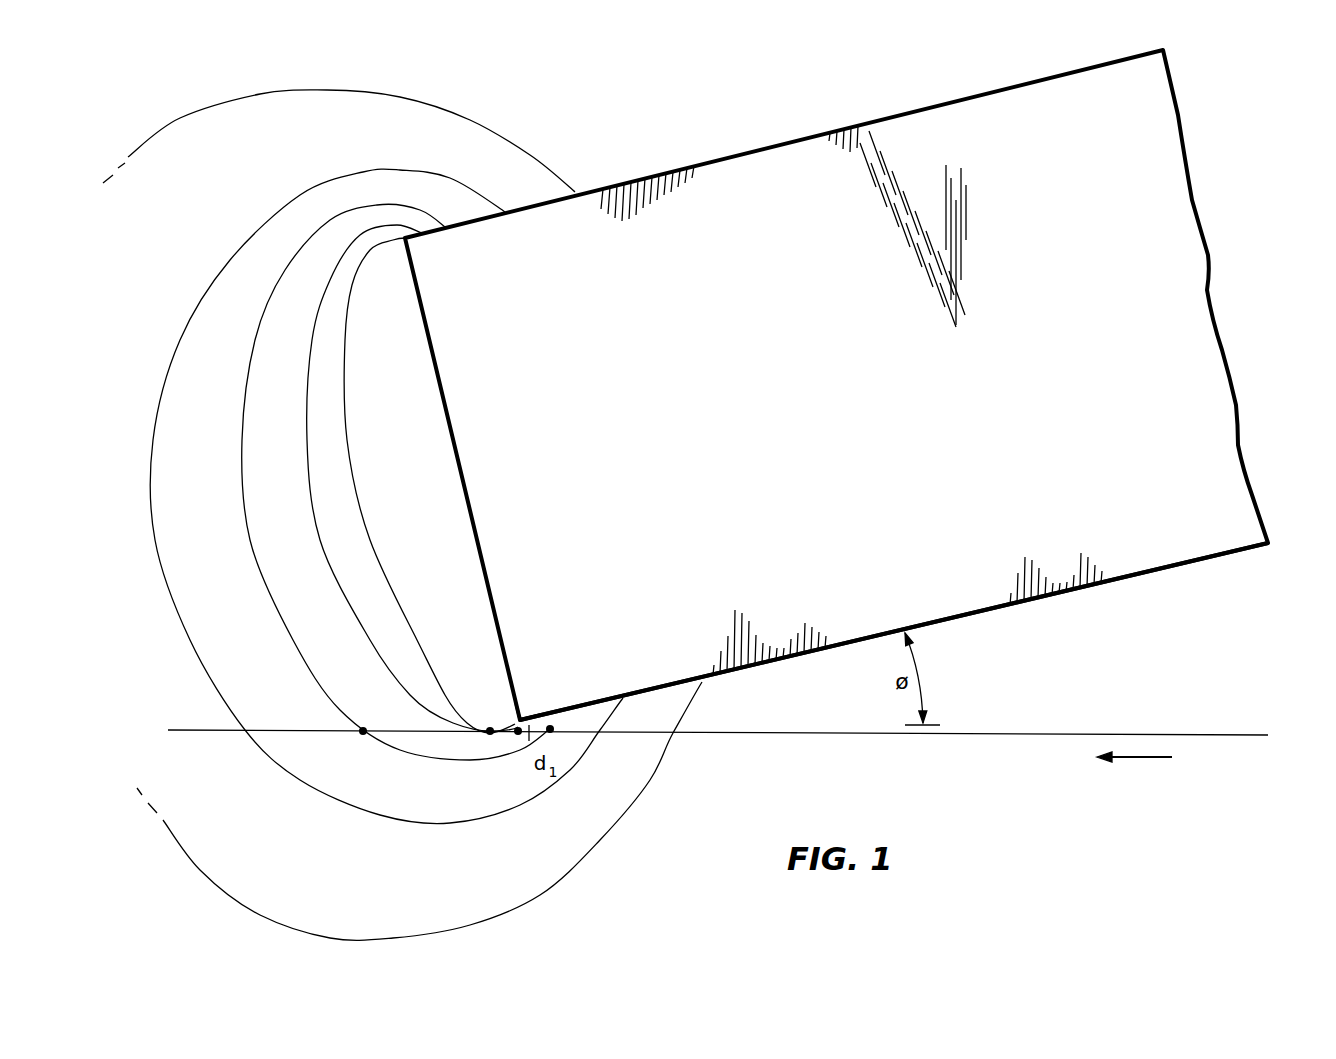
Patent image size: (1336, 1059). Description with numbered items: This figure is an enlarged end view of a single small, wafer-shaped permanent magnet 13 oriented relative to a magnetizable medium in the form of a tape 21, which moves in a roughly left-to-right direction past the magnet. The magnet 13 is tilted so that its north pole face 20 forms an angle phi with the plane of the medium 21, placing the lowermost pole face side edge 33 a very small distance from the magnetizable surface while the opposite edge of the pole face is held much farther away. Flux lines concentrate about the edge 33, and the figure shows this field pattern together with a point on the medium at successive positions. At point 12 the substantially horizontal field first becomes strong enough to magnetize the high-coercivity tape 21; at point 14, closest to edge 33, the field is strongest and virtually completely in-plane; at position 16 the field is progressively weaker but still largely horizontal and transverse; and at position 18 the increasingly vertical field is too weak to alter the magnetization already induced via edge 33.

The point on the medium 12 is at (550, 729).
The permanent magnet 13 is at (775, 352).
The point on the medium 14 is at (516, 729).
The point on the medium 16 is at (488, 729).
The point on the medium 18 is at (363, 729).
The pole face 20 is at (995, 612).
The tape 21 is at (822, 735).
The pole face side edge 33 is at (524, 719).